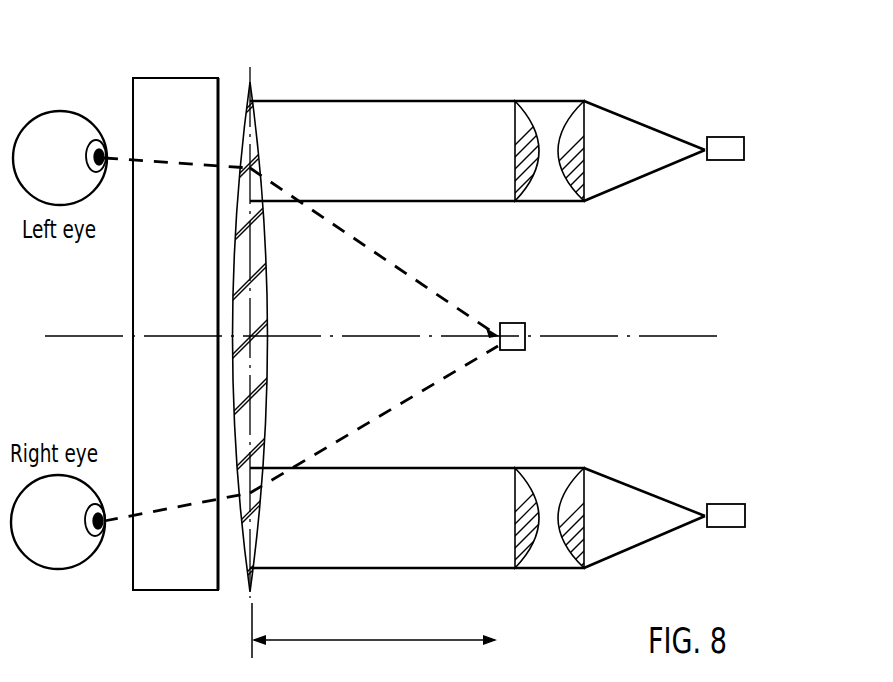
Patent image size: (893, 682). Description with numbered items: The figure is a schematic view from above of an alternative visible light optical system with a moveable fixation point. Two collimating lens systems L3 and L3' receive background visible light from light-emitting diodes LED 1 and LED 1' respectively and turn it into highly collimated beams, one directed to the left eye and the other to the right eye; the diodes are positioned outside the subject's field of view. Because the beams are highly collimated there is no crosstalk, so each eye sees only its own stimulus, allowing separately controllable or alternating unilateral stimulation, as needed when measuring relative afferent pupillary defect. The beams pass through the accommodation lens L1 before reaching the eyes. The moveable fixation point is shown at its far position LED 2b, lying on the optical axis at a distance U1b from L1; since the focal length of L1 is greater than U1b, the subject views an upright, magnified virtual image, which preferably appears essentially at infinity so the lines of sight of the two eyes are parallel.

The accommodation lens L1 is at (250, 325).
The collimating lens system L3 is at (572, 140).
The collimating lens system L3' is at (572, 540).
The left light-emitting diode LED 1 is at (760, 147).
The right light-emitting diode LED 1' is at (764, 514).
The far fixation point position LED 2b is at (524, 355).
The distance between L1 and far fixation point position U1b is at (374, 630).